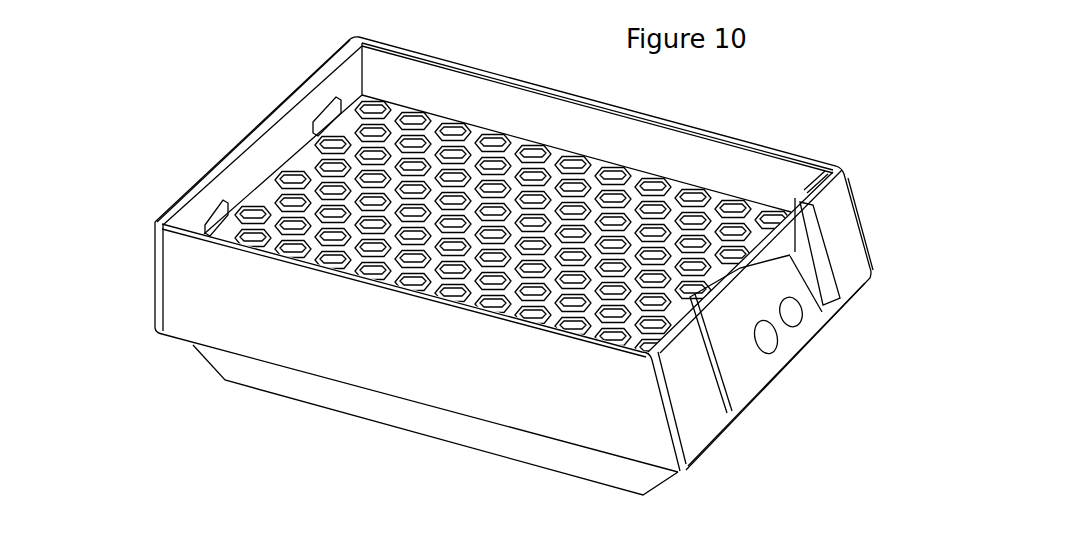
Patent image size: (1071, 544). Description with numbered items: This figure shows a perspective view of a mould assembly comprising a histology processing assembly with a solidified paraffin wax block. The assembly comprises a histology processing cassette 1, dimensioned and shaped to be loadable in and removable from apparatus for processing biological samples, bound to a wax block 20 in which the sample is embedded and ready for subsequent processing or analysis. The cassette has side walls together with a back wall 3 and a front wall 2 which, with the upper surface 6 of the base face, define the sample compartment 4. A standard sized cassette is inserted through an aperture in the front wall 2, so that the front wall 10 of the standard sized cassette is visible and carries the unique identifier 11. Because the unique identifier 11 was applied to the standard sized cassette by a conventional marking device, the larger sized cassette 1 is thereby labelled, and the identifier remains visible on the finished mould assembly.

The histology processing cassette 1 is at (152, 274).
The front wall 2 is at (847, 230).
The back wall 3 is at (236, 152).
The sample compartment 4 is at (443, 77).
The upper surface of the base face 6 is at (637, 177).
The front wall of the standard sized cassette 10 is at (742, 372).
The unique identifier 11 is at (790, 317).
The wax block 20 is at (413, 415).